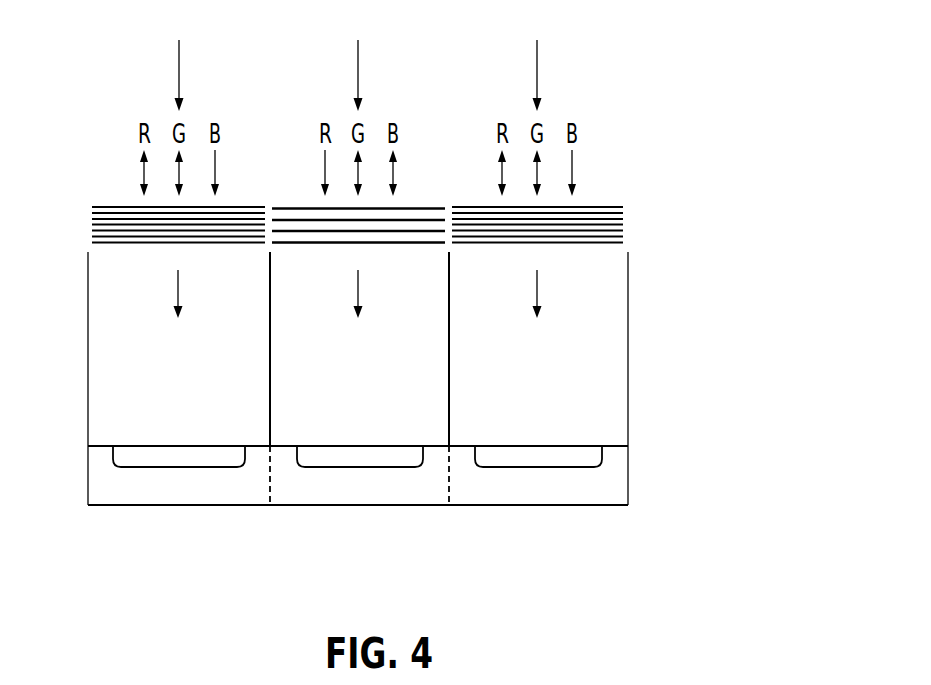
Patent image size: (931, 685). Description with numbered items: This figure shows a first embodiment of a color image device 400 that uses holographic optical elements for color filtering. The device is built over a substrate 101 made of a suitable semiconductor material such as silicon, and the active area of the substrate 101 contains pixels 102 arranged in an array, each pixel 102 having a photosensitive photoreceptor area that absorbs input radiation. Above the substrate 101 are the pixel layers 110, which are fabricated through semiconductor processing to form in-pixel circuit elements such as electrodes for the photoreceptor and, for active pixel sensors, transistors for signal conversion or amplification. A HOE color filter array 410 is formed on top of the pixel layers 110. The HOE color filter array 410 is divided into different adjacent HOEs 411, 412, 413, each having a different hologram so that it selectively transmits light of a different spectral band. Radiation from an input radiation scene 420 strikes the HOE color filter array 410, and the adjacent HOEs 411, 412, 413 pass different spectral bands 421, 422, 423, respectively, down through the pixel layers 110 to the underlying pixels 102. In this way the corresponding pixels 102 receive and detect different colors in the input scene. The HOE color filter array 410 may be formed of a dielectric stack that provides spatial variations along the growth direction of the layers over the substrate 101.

The color image device 400 is at (125, 46).
The HOE color filter array 410 is at (436, 195).
The HOE 411 is at (237, 207).
The HOE 412 is at (415, 207).
The HOE 413 is at (593, 207).
The input radiation scene 420 is at (537, 58).
The spectral band 421 is at (178, 283).
The spectral band 422 is at (358, 283).
The spectral band 423 is at (570, 294).
The pixel layers 110 is at (455, 349).
The substrate 101 is at (628, 473).
The pixels 102 is at (170, 535).